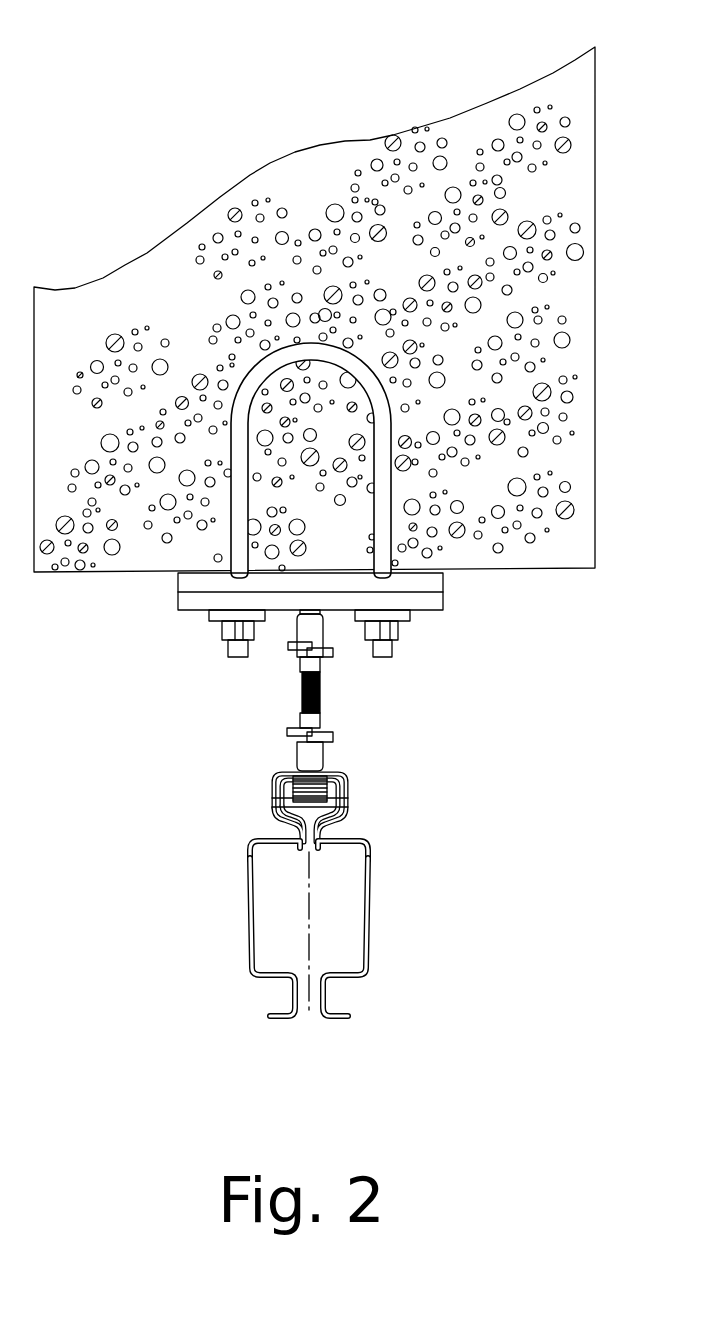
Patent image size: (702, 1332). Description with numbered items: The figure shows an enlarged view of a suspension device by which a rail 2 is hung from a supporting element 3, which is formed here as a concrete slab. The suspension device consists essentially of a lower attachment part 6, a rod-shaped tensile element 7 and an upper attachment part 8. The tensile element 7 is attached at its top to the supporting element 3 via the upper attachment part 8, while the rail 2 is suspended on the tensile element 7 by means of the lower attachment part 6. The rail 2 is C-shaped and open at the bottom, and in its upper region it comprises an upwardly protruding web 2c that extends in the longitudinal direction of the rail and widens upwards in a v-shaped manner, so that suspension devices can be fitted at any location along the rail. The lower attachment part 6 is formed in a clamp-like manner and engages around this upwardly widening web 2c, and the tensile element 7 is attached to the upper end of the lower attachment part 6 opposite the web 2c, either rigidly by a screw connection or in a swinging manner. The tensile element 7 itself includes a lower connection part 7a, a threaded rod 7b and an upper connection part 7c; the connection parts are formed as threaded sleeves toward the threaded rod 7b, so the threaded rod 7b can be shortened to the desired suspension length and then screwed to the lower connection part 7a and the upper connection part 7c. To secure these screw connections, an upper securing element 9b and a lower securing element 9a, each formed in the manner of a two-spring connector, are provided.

The rail 2 is at (298, 919).
The upwardly protruding web 2c is at (241, 843).
The supporting element 3 is at (158, 292).
The lower attachment part 6 is at (360, 810).
The tensile element 7 is at (335, 700).
The lower connection part 7a is at (307, 755).
The threaded rod 7b is at (302, 693).
The upper connection part 7c is at (314, 631).
The upper attachment part 8 is at (477, 613).
The lower securing element 9a is at (333, 735).
The upper securing element 9b is at (288, 646).